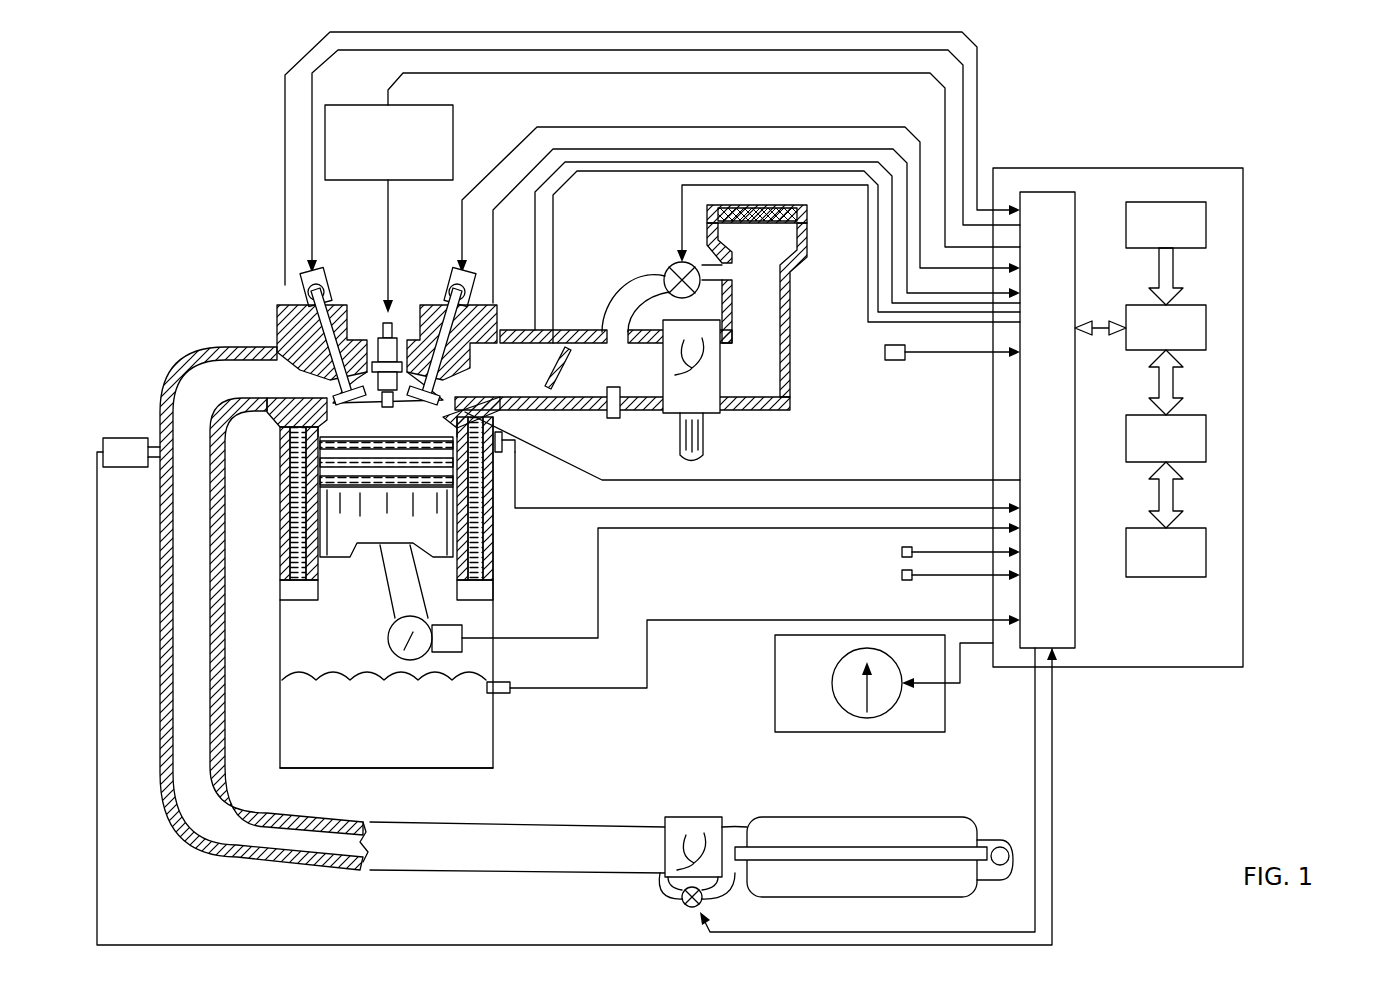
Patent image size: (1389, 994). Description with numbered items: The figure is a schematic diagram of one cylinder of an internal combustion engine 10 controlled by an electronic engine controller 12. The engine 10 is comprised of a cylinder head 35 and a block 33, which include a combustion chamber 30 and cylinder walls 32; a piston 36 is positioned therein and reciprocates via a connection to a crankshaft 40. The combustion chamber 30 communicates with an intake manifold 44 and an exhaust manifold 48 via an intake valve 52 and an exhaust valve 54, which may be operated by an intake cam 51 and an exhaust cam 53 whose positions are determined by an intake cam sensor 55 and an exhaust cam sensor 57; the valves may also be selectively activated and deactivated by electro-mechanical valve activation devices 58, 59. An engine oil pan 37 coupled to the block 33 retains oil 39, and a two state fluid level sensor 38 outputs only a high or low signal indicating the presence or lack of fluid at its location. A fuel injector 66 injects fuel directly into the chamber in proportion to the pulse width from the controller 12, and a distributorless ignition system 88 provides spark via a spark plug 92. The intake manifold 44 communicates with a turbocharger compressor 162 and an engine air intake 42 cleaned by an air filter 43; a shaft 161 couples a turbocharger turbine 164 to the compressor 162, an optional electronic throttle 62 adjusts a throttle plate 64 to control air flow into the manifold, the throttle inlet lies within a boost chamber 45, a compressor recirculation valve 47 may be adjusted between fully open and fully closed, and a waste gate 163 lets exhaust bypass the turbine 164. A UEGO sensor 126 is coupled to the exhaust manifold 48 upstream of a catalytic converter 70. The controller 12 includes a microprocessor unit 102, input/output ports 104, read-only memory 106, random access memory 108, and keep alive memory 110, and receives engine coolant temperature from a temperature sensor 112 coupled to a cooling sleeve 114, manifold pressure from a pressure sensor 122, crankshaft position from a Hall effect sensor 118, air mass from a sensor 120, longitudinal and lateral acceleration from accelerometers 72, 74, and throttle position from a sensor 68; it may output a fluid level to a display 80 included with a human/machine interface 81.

The internal combustion engine 10 is at (200, 252).
The electronic engine controller 12 is at (1243, 172).
The combustion chamber 30 is at (385, 415).
The cylinder walls 32 is at (323, 565).
The block 33 is at (270, 457).
The cylinder head 35 is at (268, 301).
The piston 36 is at (352, 515).
The engine oil pan 37 is at (493, 747).
The two state fluid level sensor 38 is at (510, 686).
The oil 39 is at (292, 670).
The crankshaft 40 is at (400, 628).
The engine air intake 42 is at (610, 228).
The air filter 43 is at (775, 223).
The intake manifold 44 is at (530, 386).
The boost chamber 45 is at (640, 386).
The compressor recirculation valve 47 is at (667, 268).
The exhaust manifold 48 is at (260, 389).
The intake cam 51 is at (452, 268).
The intake valve 52 is at (437, 378).
The exhaust cam 53 is at (322, 268).
The exhaust valve 54 is at (277, 352).
The intake cam sensor 55 is at (480, 303).
The exhaust cam sensor 57 is at (298, 296).
The valve activation device 58 is at (330, 292).
The valve activation device 59 is at (458, 306).
The electronic throttle 62 is at (563, 366).
The throttle plate 64 is at (557, 384).
The fuel injector 66 is at (508, 440).
The throttle position sensor 68 is at (497, 332).
The catalytic converter 70 is at (790, 817).
The accelerometer 72 is at (902, 552).
The accelerometer 74 is at (902, 575).
The display 80 is at (840, 668).
The human/machine interface 81 is at (775, 683).
The distributorless ignition system 88 is at (342, 105).
The spark plug 92 is at (400, 318).
The microprocessor unit 102 is at (1206, 330).
The input/output ports 104 is at (1075, 200).
The read-only memory 106 is at (1206, 228).
The random access memory 108 is at (1206, 442).
The keep alive memory 110 is at (1206, 552).
The temperature sensor 112 is at (505, 457).
The cooling sleeve 114 is at (493, 530).
The Hall effect sensor 118 is at (462, 635).
The air mass sensor 120 is at (893, 347).
The pressure sensor 122 is at (607, 418).
The Universal Exhaust Gas Oxygen sensor 126 is at (103, 447).
The shaft 161 is at (680, 440).
The turbocharger compressor 162 is at (707, 398).
The waste gate 163 is at (682, 902).
The turbocharger turbine 164 is at (668, 817).